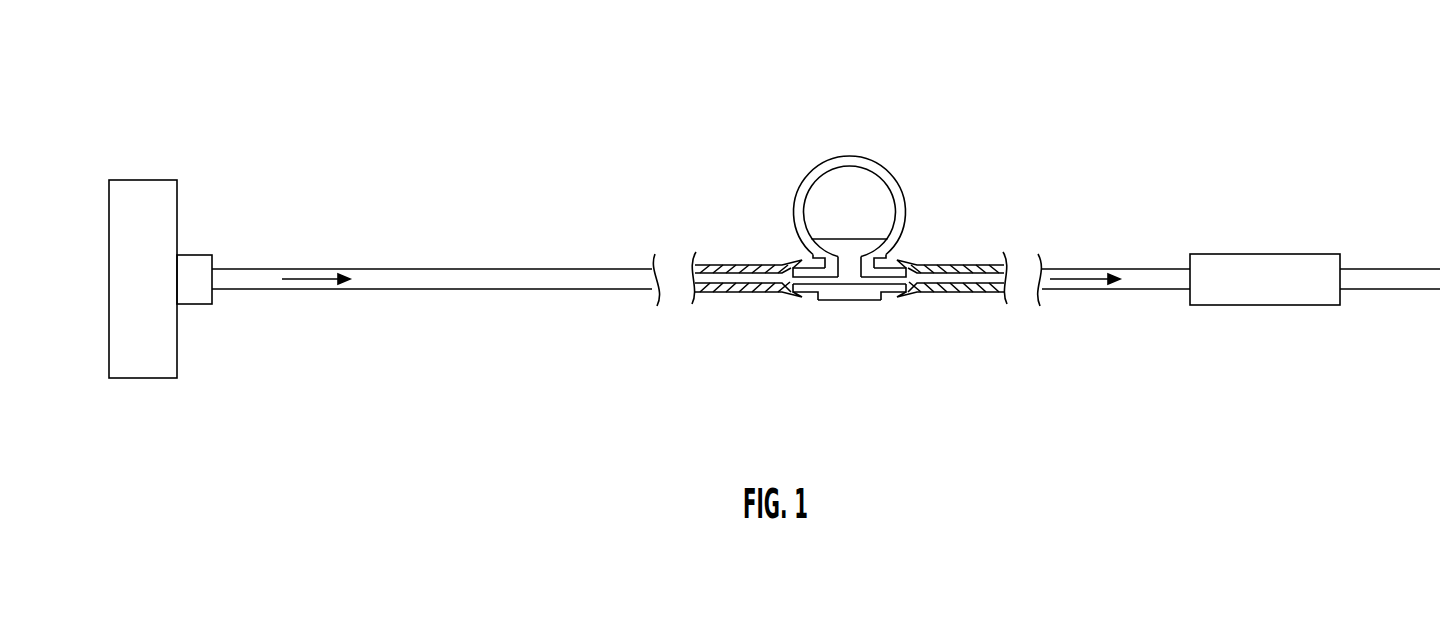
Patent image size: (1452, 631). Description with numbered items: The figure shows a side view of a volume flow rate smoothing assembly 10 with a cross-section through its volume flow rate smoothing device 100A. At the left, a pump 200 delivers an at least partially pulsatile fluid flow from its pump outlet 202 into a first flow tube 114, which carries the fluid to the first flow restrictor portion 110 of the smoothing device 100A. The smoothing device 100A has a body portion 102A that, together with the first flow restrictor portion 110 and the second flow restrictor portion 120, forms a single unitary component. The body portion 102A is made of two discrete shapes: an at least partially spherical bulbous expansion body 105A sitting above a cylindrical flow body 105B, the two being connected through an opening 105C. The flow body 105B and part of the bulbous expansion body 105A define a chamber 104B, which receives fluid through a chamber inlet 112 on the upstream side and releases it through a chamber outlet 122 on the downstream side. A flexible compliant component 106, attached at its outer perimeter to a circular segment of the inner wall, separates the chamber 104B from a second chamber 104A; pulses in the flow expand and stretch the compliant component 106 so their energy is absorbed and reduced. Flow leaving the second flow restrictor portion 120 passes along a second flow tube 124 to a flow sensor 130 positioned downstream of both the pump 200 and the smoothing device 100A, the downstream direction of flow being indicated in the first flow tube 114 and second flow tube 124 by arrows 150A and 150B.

The volume flow rate smoothing assembly 10 is at (658, 42).
The volume flow rate smoothing device 100A is at (866, 117).
The body portion 102A is at (843, 199).
The second chamber 104A is at (823, 200).
The chamber 104B is at (835, 277).
The bulbous expansion body 105A is at (830, 157).
The flow body 105B is at (845, 300).
The opening 105C is at (852, 264).
The compliant component 106 is at (861, 234).
The first flow restrictor portion 110 is at (810, 290).
The chamber inlet 112 is at (818, 275).
The first flow tube 114 is at (548, 269).
The second flow restrictor portion 120 is at (889, 290).
The chamber outlet 122 is at (877, 275).
The second flow tube 124 is at (1080, 269).
The flow sensor 130 is at (1265, 253).
The flow direction upstream 150A is at (313, 281).
The flow direction downstream 150B is at (1085, 281).
The pump 200 is at (143, 179).
The pump outlet 202 is at (197, 253).